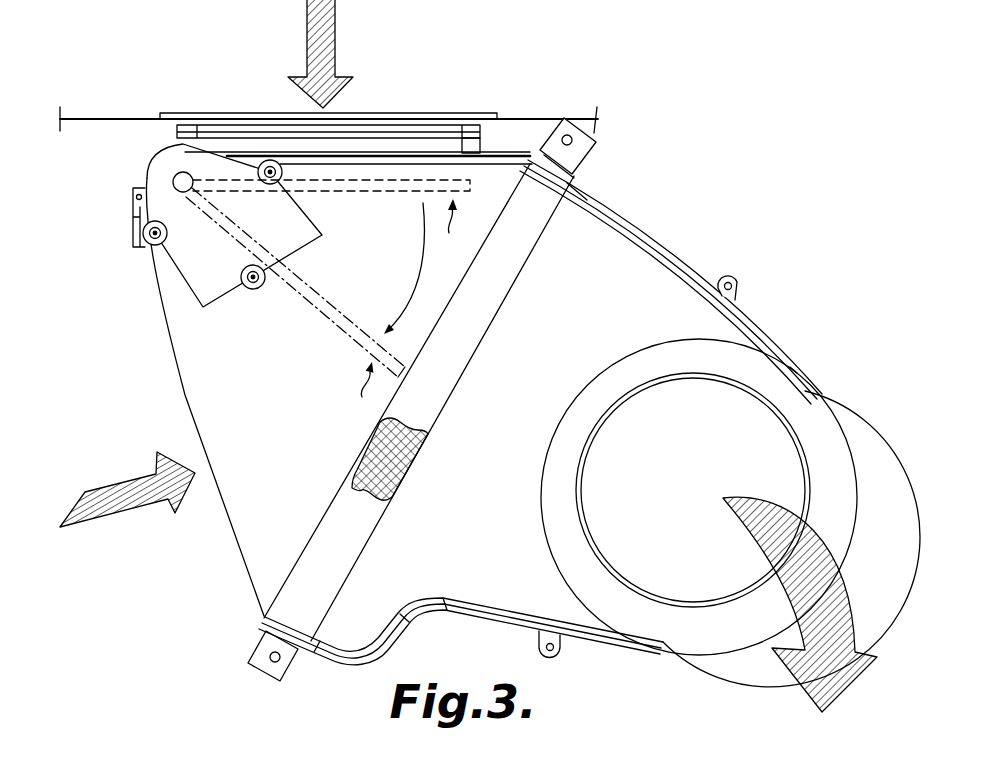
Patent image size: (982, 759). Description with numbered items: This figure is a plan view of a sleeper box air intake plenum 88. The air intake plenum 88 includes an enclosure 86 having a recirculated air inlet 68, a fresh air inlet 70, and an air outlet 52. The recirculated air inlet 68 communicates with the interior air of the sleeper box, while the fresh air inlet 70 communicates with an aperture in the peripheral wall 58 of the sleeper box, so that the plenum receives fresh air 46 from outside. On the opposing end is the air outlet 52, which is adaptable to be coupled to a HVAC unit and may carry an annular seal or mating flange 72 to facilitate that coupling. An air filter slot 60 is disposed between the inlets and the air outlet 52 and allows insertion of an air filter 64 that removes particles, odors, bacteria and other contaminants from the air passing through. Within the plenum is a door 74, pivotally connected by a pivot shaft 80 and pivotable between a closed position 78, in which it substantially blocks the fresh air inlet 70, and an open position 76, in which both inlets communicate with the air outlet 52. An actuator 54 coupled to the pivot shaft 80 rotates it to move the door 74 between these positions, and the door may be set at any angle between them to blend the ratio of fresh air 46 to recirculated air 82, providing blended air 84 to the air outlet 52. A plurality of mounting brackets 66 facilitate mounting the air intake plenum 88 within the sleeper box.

The fresh air 46 is at (306, 28).
The air outlet 52 is at (732, 402).
The actuator 54 is at (193, 290).
The peripheral wall 58 is at (535, 118).
The air filter slot 60 is at (478, 354).
The air filter 64 is at (415, 462).
The mounting brackets 66 is at (598, 149).
The recirculated air inlet 68 is at (240, 551).
The fresh air inlet 70 is at (424, 113).
The annular seal or mating flange 72 is at (793, 402).
The door 74 is at (355, 194).
The open position 76 is at (364, 391).
The closed position 78 is at (422, 266).
The pivot shaft 80 is at (173, 178).
The recirculated air 82 is at (128, 478).
The blended air 84 is at (850, 598).
The enclosure 86 is at (620, 258).
The air intake plenum 88 is at (128, 60).